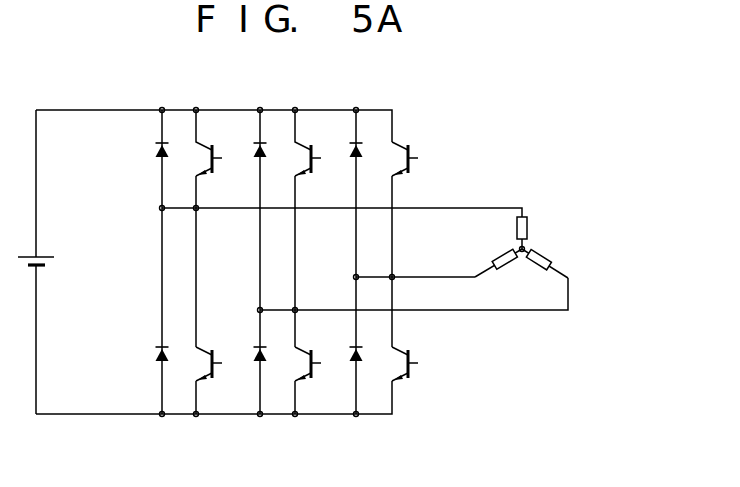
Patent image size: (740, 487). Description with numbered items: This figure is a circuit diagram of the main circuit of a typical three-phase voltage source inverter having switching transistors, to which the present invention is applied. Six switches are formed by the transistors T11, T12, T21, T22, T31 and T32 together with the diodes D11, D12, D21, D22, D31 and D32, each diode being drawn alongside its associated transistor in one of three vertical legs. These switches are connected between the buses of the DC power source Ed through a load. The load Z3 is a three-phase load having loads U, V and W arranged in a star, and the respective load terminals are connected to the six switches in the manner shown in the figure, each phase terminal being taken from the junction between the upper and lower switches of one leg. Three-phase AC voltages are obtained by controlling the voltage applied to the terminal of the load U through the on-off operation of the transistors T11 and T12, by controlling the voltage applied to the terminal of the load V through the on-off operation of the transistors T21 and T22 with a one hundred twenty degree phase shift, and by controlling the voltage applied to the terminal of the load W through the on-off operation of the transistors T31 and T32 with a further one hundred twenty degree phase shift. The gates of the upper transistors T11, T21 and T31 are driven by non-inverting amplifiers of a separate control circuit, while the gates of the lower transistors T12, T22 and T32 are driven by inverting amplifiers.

The transistor T11 is at (208, 141).
The transistor T12 is at (205, 346).
The transistor T21 is at (309, 129).
The transistor T22 is at (308, 334).
The transistor T31 is at (405, 141).
The transistor T32 is at (406, 344).
The diode D11 is at (151, 152).
The diode D12 is at (152, 361).
The diode D21 is at (251, 155).
The diode D22 is at (251, 363).
The diode D31 is at (347, 155).
The diode D32 is at (347, 360).
The DC power source Ed is at (52, 252).
The load Z3 is at (522, 231).
The load U is at (531, 230).
The load V is at (545, 259).
The load W is at (496, 258).